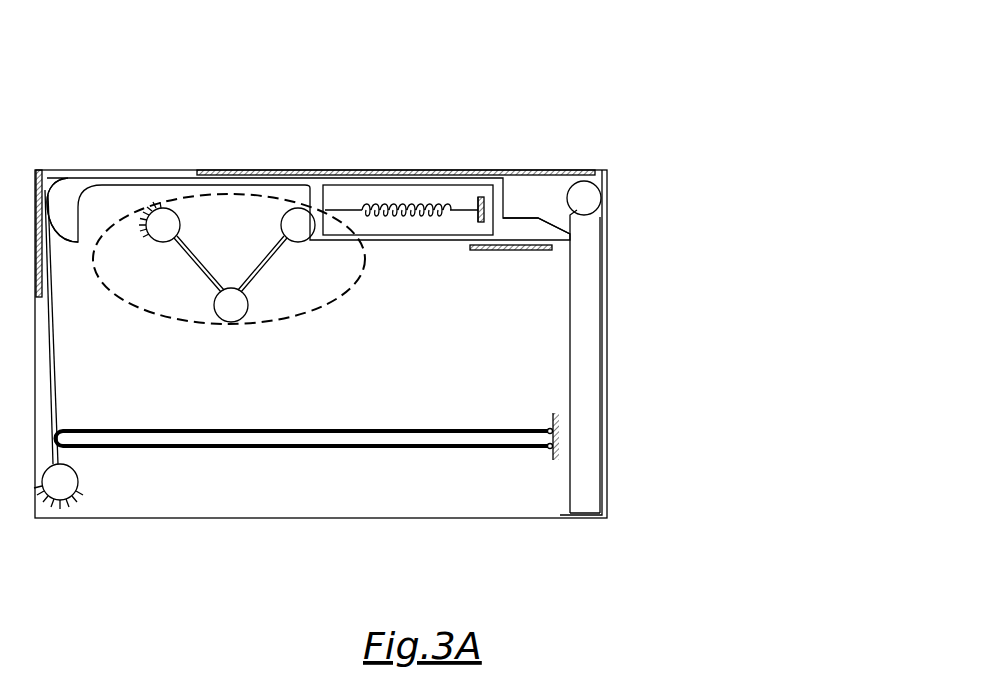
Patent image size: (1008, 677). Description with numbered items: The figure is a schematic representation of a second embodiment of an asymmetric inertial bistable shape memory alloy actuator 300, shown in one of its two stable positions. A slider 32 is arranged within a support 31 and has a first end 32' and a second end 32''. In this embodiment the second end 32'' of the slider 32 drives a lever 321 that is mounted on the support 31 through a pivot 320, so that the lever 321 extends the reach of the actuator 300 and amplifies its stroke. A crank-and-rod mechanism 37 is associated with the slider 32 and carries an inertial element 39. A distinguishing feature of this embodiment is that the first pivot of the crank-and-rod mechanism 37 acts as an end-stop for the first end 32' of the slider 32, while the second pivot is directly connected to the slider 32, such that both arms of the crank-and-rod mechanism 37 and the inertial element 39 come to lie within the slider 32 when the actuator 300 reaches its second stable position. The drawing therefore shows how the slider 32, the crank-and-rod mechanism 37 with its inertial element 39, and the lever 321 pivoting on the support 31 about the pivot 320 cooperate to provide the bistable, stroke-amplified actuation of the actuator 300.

The asymmetric inertial bistable shape memory alloy actuator 300 is at (275, 143).
The support 31 is at (255, 498).
The slider 32 is at (321, 160).
The first end of slider 32' is at (81, 278).
The second end of slider 32'' is at (517, 173).
The pivot 320 is at (584, 193).
The lever 321 is at (593, 502).
The crank-and-rod mechanism 37 is at (347, 292).
The inertial element 39 is at (225, 303).